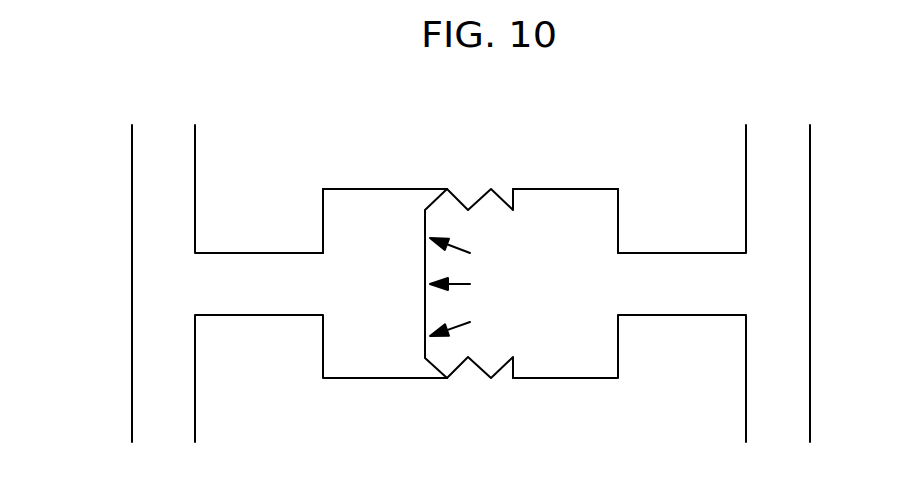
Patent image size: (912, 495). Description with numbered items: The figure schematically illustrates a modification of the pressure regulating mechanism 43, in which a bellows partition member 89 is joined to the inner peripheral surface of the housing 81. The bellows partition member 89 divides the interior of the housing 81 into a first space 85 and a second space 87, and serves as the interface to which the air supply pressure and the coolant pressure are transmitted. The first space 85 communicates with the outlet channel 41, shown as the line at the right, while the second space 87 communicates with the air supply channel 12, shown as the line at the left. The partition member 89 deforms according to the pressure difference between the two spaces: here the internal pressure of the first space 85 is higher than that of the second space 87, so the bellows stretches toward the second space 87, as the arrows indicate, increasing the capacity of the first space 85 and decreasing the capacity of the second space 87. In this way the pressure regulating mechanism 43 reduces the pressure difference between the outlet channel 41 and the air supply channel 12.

The air supply channel 12 is at (140, 222).
The outlet channel 41 is at (790, 221).
The housing 81 is at (593, 187).
The first space 85 is at (538, 207).
The second space 87 is at (353, 207).
The bellows partition member 89 is at (476, 200).
The pressure regulating mechanism 43 is at (597, 442).